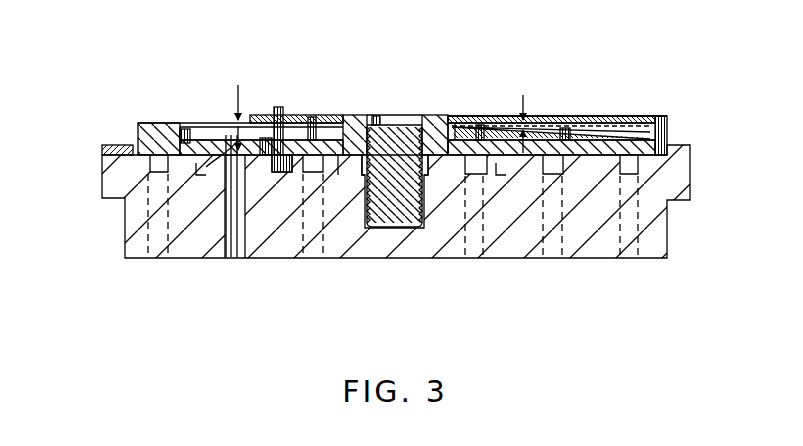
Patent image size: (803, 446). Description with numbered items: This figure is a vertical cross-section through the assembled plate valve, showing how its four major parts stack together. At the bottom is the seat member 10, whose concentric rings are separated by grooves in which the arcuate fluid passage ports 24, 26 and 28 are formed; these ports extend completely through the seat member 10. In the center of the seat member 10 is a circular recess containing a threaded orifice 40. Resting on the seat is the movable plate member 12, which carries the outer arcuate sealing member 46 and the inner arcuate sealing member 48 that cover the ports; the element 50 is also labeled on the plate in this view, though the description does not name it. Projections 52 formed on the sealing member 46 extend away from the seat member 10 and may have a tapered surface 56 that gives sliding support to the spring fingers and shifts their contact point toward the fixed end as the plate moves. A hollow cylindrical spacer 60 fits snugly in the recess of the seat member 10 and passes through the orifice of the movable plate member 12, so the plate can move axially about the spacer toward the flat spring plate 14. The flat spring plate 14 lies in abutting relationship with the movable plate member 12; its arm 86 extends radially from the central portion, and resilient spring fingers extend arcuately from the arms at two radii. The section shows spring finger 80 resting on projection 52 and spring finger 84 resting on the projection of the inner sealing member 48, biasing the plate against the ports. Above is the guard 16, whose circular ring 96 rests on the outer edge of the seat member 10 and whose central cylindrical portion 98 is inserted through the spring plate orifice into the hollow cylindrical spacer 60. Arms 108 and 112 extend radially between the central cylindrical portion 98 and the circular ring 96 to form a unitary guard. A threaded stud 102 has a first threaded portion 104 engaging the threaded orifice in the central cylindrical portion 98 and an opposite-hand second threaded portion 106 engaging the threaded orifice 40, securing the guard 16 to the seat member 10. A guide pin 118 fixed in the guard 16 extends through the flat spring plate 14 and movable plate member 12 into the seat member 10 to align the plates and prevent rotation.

The seat member 10 is at (122, 246).
The movable plate member 12 is at (132, 135).
The flat spring plate 14 is at (588, 157).
The guard 16 is at (652, 112).
The fluid passage port 24 is at (158, 260).
The fluid passage port 26 is at (240, 246).
The fluid passage port 28 is at (317, 260).
The threaded orifice 40 is at (410, 228).
The arcuate sealing member 46 is at (627, 123).
The arcuate sealing member 48 is at (550, 135).
The retaining pin 50 is at (312, 120).
The projection 52 is at (164, 140).
The tapered surface 56 is at (196, 131).
The hollow cylindrical spacer 60 is at (470, 118).
The spring finger 80 is at (155, 123).
The spring finger 84 is at (364, 112).
The arm 86 is at (654, 133).
The circular ring 96 is at (121, 144).
The central cylindrical portion 98 is at (438, 160).
The threaded stud 102 is at (398, 118).
The first threaded portion 104 is at (350, 121).
The second threaded portion 106 is at (356, 140).
The arm 108 is at (604, 130).
The arm 112 is at (305, 115).
The guide pin 118 is at (275, 108).